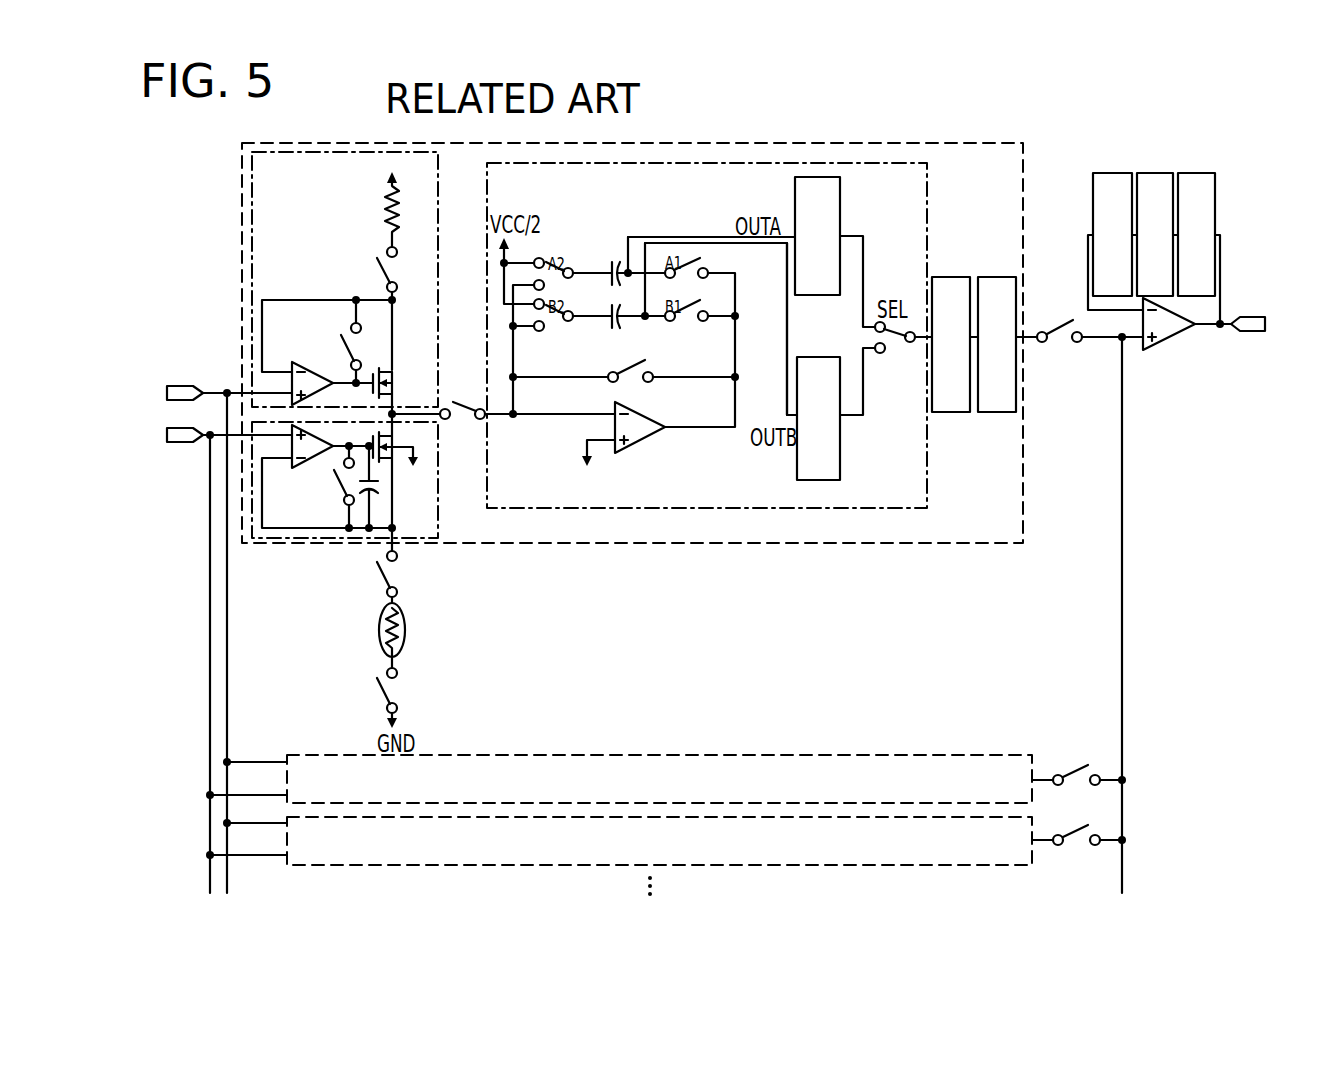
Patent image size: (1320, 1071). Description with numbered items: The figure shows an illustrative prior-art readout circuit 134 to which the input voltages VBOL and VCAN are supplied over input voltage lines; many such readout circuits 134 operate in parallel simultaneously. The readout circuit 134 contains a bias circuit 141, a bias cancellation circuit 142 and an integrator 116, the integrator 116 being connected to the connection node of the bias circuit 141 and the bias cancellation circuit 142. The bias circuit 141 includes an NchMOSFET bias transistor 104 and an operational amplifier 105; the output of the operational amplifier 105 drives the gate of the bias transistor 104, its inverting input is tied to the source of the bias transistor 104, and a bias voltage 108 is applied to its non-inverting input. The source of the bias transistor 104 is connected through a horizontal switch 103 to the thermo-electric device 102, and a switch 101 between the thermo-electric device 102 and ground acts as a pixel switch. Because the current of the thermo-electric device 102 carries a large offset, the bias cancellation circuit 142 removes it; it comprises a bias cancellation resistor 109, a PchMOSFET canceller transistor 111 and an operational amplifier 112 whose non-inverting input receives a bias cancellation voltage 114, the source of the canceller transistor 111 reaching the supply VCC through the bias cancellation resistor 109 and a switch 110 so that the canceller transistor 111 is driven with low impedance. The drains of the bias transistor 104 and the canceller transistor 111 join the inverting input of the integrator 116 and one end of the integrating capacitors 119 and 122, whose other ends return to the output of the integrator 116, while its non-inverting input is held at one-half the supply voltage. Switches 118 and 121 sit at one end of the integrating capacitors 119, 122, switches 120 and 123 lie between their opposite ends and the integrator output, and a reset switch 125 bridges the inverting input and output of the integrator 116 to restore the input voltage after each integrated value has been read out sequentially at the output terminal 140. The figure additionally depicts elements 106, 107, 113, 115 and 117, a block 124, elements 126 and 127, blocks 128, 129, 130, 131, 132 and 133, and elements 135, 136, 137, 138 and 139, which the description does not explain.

The switch 101 is at (400, 693).
The thermo-electric device 102 is at (406, 628).
The horizontal switch 103 is at (400, 572).
The bias transistor 104 is at (396, 439).
The operational amplifier 105 is at (287, 465).
The switch 106 is at (337, 490).
The capacitor 107 is at (392, 490).
The bias voltage 108 is at (186, 446).
The bias cancellation resistor 109 is at (378, 210).
The switch 110 is at (378, 255).
The canceller transistor 111 is at (400, 368).
The operational amplifier 112 is at (287, 366).
The switch 113 is at (347, 338).
The bias cancellation voltage 114 is at (203, 384).
The switch 115 is at (465, 398).
The integrator 116 is at (650, 413).
The VCC/2 reference input 117 is at (587, 446).
The switch 118 is at (571, 262).
The integrating capacitor 119 is at (615, 262).
The switch 120 is at (705, 265).
The switch 121 is at (548, 330).
The integrating capacitor 122 is at (607, 324).
The switch 123 is at (682, 321).
The integration circuit 124 is at (530, 200).
The reset switch 125 is at (628, 384).
The output line OUTA 126 is at (692, 237).
The output line OUTB 127 is at (787, 310).
The source follower 1A 128 is at (840, 185).
The source follower 1B 129 is at (840, 435).
The select switch 130 is at (893, 345).
The source follower stage 131 is at (976, 285).
The source follower 2 132 is at (960, 277).
The source follower 3 133 is at (995, 277).
The readout circuit 134 is at (1023, 155).
The horizontal selection switch 135 is at (1058, 320).
The output amplifier 136 is at (1170, 350).
The source follower 1C 137 is at (1200, 173).
The source follower 2C 138 is at (1158, 173).
The source follower 3C 139 is at (1113, 173).
The output terminal 140 is at (1250, 332).
The bias circuit 141 is at (438, 522).
The bias cancellation circuit 142 is at (436, 175).